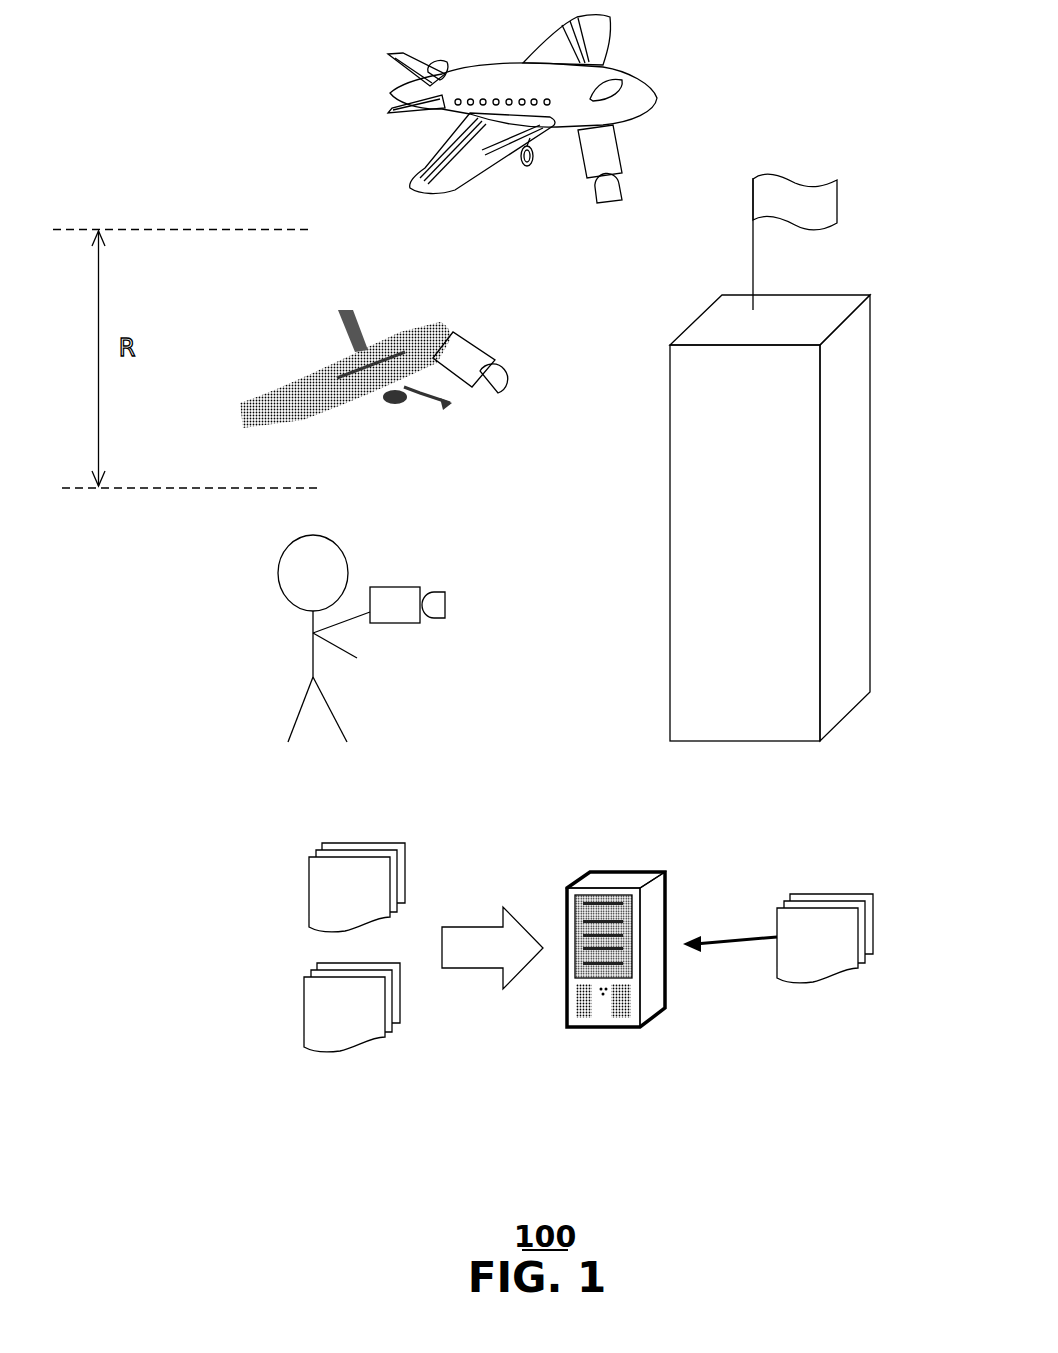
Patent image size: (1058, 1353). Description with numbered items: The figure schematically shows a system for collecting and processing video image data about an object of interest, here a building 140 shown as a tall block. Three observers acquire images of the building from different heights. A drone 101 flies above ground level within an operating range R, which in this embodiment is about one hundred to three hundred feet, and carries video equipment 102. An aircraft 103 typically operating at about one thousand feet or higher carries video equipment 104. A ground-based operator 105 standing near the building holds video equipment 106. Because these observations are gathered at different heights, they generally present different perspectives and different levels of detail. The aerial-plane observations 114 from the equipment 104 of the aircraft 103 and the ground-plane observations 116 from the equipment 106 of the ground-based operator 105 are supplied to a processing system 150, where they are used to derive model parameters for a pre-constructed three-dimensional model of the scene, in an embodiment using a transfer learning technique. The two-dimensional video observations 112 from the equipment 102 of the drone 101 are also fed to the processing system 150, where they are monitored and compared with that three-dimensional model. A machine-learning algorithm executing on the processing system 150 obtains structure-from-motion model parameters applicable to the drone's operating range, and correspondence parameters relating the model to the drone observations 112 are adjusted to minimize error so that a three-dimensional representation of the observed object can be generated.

The drone 101 is at (402, 345).
The video equipment 102 is at (473, 345).
The aircraft 103 is at (437, 153).
The video equipment 104 is at (618, 143).
The ground-based operator 105 is at (246, 584).
The video equipment 106 is at (395, 587).
The video observations 112 is at (822, 927).
The aerial-plane observations 114 is at (308, 888).
The ground-plane observations 116 is at (303, 1008).
The building 140 is at (870, 492).
The processing system 150 is at (617, 868).